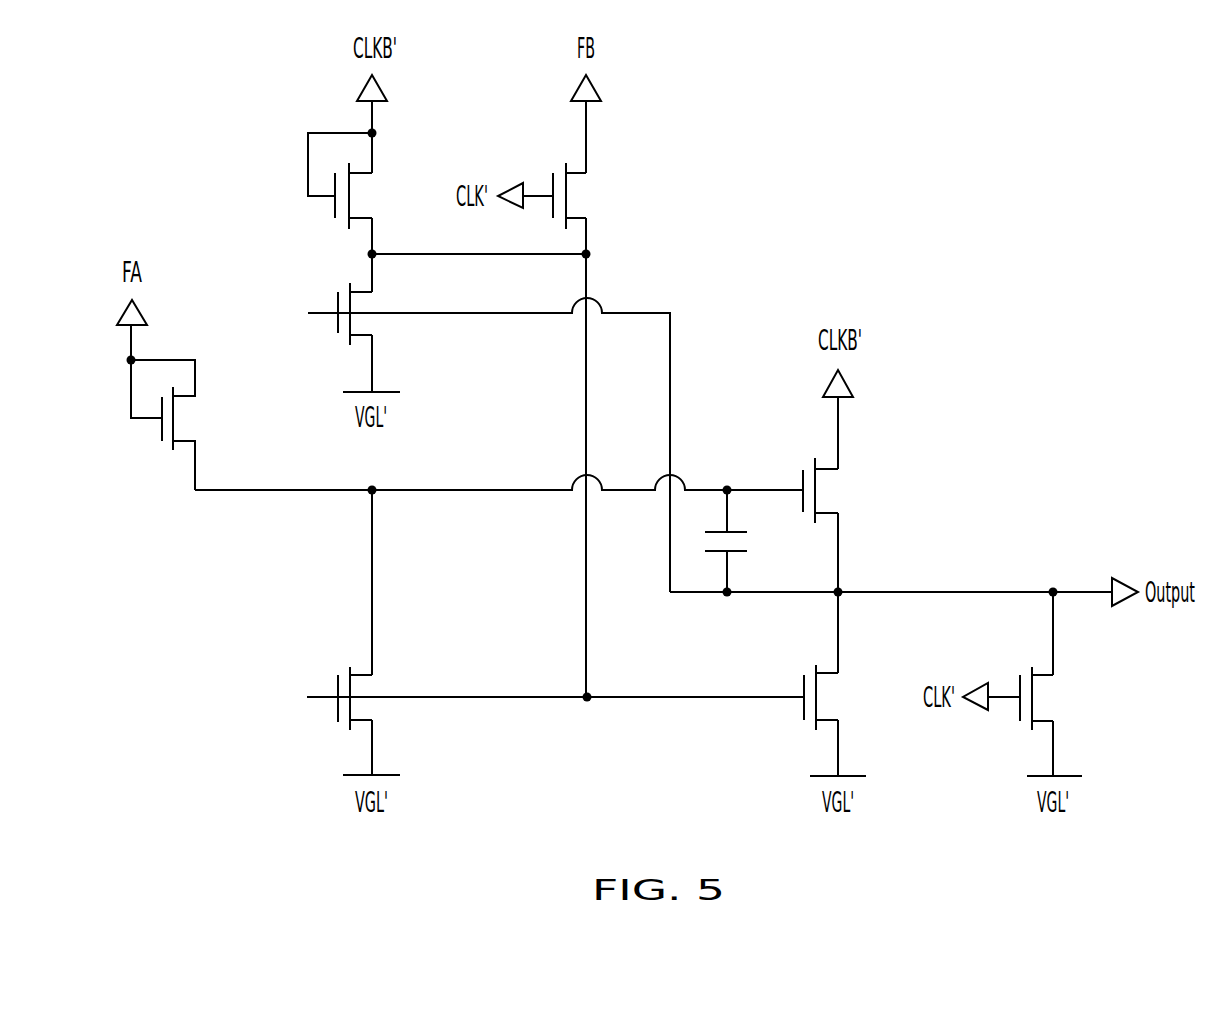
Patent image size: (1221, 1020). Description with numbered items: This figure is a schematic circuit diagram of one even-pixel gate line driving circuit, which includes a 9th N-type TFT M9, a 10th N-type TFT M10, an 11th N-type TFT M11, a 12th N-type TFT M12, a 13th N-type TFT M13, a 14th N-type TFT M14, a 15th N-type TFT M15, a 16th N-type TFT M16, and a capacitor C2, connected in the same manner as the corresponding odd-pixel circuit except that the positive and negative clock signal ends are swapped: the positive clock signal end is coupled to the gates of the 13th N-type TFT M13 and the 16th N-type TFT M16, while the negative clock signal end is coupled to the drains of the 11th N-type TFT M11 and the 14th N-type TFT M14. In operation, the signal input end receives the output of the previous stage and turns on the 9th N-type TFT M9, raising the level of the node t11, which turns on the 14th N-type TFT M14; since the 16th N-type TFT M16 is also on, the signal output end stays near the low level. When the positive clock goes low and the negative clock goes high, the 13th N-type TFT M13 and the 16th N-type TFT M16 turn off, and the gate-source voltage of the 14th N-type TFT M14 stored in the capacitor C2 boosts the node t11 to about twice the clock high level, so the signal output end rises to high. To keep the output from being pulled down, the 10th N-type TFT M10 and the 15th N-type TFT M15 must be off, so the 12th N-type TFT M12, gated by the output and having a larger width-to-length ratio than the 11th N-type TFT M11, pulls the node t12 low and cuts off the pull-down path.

The 9th N-type TFT M9 is at (179, 425).
The 10th N-type TFT M10 is at (375, 718).
The 11th N-type TFT M11 is at (357, 193).
The 12th N-type TFT M12 is at (375, 323).
The 13th N-type TFT M13 is at (590, 208).
The 14th N-type TFT M14 is at (840, 525).
The 15th N-type TFT M15 is at (840, 684).
The 16th N-type TFT M16 is at (1056, 684).
The capacitor C2 is at (741, 541).
The node t11 is at (387, 582).
The node t12 is at (587, 718).